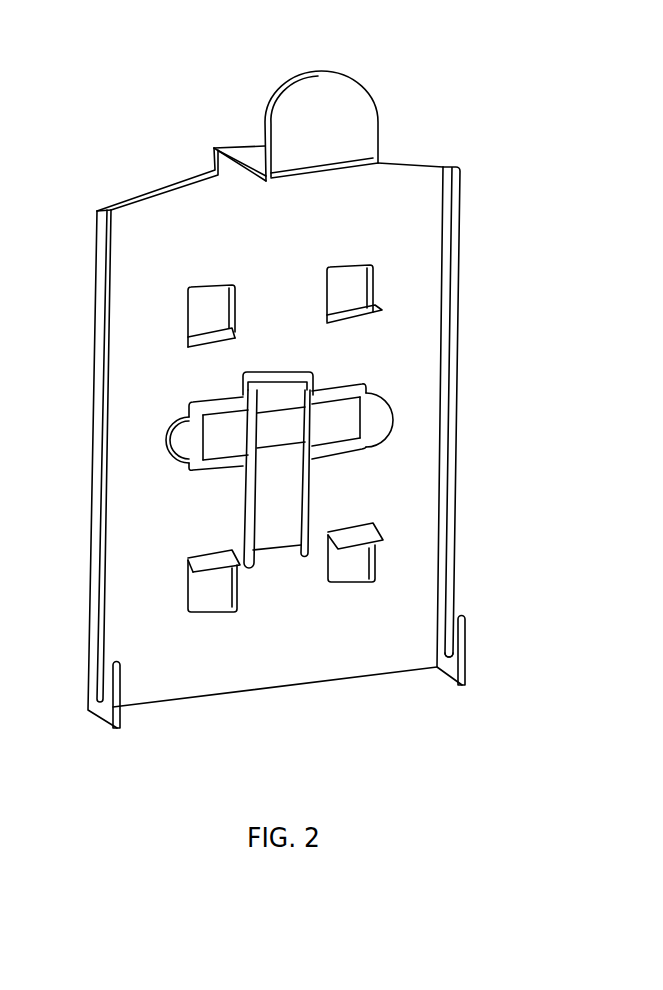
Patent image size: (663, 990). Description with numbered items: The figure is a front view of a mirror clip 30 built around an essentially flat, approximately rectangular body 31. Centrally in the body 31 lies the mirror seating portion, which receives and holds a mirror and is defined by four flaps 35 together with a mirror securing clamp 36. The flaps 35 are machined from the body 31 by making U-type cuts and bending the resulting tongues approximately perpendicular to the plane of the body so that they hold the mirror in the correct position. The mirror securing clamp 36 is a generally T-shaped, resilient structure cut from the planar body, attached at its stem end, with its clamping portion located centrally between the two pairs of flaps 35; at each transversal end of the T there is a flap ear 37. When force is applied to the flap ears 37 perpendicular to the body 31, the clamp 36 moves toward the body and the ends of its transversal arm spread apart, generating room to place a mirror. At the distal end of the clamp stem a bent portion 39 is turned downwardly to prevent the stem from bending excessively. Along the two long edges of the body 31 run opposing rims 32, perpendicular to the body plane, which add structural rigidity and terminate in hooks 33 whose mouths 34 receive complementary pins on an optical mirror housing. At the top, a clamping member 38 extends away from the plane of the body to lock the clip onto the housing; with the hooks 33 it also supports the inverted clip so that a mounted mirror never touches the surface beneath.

The mirror clip 30 is at (295, 397).
The body 31 is at (410, 176).
The rims 32 is at (448, 333).
The hooks 33 is at (466, 670).
The mouths 34 is at (455, 630).
The flaps 35 is at (239, 330).
The mirror securing clamp 36 is at (323, 405).
The flap ears 37 is at (176, 439).
The clamping member 38 is at (338, 86).
The bent portion 39 is at (263, 360).